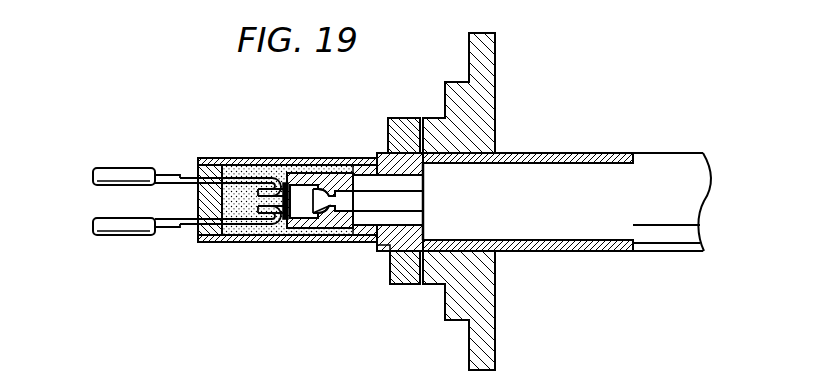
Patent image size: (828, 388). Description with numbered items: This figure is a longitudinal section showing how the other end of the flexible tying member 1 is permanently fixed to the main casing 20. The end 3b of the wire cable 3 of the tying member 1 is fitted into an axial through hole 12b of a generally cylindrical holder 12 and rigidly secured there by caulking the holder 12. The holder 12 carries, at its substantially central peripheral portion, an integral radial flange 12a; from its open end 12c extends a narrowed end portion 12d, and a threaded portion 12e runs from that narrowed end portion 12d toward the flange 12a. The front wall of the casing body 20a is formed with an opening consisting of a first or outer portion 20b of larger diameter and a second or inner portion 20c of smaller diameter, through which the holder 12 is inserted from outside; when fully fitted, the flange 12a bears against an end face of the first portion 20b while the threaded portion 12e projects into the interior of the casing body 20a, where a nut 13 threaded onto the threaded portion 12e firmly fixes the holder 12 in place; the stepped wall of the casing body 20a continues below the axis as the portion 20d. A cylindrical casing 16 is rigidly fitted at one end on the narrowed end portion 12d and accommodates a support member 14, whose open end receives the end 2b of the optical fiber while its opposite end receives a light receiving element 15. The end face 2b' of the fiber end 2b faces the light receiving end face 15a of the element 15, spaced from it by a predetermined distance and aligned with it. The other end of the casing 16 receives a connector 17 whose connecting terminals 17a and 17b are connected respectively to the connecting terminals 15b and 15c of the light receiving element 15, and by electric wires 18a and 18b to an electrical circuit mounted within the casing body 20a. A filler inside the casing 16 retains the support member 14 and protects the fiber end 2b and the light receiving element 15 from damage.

The flexible tying member 1 is at (685, 146).
The wire cable 3 is at (612, 175).
The end of the wire cable 3b is at (483, 190).
The holder 12 is at (550, 252).
The radial flange 12a is at (496, 280).
The axial through hole 12b is at (589, 240).
The open end 12c is at (355, 197).
The narrowed end portion 12d is at (362, 241).
The threaded portion 12e is at (381, 256).
The nut 13 is at (407, 285).
The end of the optical fiber 2b is at (391, 133).
The end face of the optical fiber end 2b' is at (330, 293).
The main casing 20 is at (452, 61).
The casing body 20a is at (495, 48).
The first or outer portion of the opening 20b is at (480, 102).
The second or inner portion of the opening 20c is at (457, 138).
The nut lower portion 20d is at (426, 268).
The support member 14 is at (305, 178).
The light receiving element 15 is at (291, 236).
The light receiving end face 15a is at (320, 218).
The connecting terminal of the light receiving element 15b is at (270, 180).
The connecting terminal of the light receiving element 15c is at (278, 240).
The cylindrical casing 16 is at (243, 151).
The connector 17 is at (200, 204).
The connecting terminal of the connector 17a is at (186, 178).
The connecting terminal of the connector 17b is at (188, 226).
The electric wire 18a is at (108, 167).
The electric wire 18b is at (108, 236).